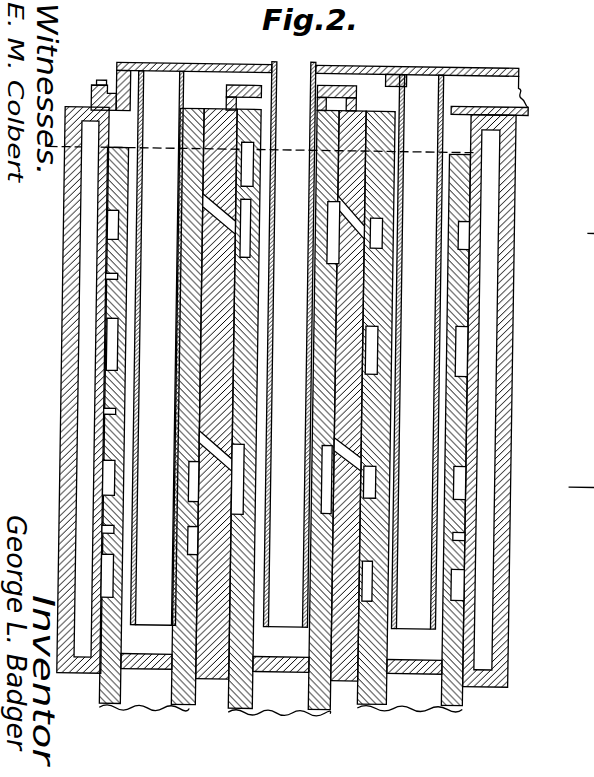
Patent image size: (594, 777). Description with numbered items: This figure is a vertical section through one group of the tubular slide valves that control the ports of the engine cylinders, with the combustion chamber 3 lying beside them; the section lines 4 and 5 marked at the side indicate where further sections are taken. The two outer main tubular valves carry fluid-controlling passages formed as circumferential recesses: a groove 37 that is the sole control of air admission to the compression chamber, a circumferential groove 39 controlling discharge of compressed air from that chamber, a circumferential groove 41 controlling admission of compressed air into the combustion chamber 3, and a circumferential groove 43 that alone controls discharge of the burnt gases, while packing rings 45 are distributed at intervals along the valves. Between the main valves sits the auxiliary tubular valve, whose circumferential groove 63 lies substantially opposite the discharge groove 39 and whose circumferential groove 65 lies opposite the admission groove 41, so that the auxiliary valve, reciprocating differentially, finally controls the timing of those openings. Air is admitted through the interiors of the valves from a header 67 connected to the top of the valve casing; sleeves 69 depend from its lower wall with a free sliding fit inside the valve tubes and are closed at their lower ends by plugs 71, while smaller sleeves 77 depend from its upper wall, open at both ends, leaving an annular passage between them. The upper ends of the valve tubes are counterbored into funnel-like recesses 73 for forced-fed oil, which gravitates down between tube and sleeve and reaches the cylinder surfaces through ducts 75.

The combustion chamber 3 is at (289, 143).
The section line 4 is at (580, 233).
The section line 5 is at (569, 489).
The groove 37 is at (111, 573).
The circumferential groove 39 is at (113, 481).
The circumferential groove 41 is at (104, 235).
The circumferential groove 43 is at (111, 345).
The packing rings 45 is at (189, 542).
The circumferential groove 63 is at (241, 487).
The circumferential groove 65 is at (240, 233).
The header 67 is at (472, 65).
The sleeves 69 is at (223, 70).
The plugs 71 is at (141, 670).
The funnel-like recesses 73 is at (245, 148).
The ducts 75 is at (108, 283).
The sleeves 77 is at (136, 83).